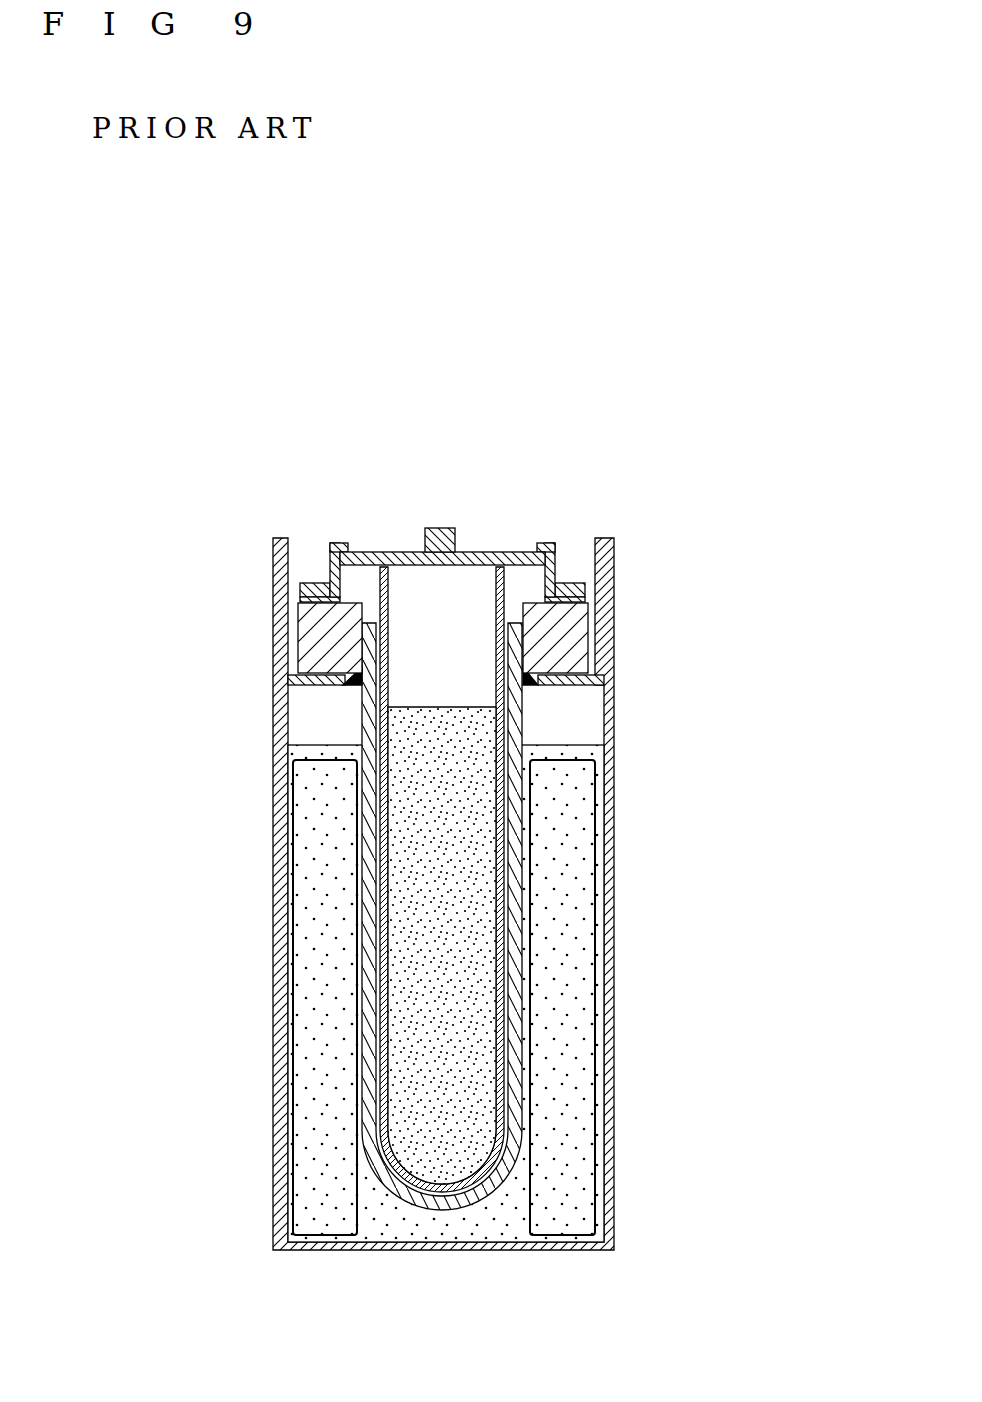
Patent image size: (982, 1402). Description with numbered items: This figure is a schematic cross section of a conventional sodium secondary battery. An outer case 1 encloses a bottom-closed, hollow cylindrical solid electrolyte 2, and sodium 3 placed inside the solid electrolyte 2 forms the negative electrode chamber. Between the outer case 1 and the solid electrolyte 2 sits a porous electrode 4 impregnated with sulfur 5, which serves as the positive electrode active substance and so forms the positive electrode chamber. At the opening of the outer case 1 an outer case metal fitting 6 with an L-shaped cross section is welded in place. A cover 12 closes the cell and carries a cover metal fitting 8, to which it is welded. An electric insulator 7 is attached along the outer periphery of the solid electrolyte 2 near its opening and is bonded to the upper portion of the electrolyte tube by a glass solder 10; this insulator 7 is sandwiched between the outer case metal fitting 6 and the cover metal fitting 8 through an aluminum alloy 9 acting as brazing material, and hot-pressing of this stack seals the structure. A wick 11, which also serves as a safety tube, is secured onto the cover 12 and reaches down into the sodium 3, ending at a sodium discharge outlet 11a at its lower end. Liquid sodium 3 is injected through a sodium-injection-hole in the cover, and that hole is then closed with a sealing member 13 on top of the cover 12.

The outer case 1 is at (612, 985).
The solid electrolyte 2 is at (517, 923).
The sodium 3 is at (480, 863).
The porous electrode 4 is at (575, 795).
The sulfur 5 is at (525, 1197).
The outer case metal fitting 6 is at (572, 692).
The electric insulator 7 is at (580, 617).
The cover metal fitting 8 is at (558, 560).
The aluminum alloy 9 is at (592, 597).
The glass solder 10 is at (357, 683).
The wick 11 is at (384, 592).
The sodium discharge outlet 11a is at (443, 1195).
The cover 12 is at (491, 552).
The sealing member 13 is at (440, 527).